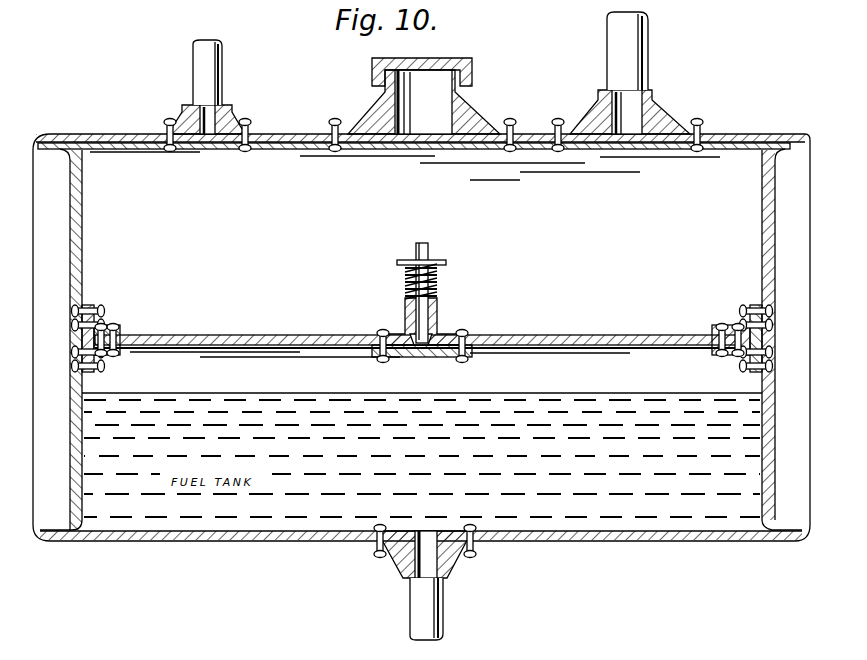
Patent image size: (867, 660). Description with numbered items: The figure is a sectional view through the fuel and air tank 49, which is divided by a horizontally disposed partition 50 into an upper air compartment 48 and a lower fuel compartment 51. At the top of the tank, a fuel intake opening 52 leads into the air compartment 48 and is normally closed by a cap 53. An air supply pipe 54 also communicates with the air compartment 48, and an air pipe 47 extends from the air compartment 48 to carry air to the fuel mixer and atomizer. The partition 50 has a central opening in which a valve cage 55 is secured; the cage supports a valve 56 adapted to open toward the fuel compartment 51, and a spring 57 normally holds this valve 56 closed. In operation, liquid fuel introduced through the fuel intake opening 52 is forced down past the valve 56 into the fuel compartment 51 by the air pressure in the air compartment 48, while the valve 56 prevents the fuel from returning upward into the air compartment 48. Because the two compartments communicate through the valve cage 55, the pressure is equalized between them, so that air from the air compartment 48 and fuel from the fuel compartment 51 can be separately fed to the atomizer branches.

The air pipe 47 is at (223, 74).
The upper air compartment 48 is at (420, 336).
The fuel and air tank 49 is at (740, 133).
The partition 50 is at (560, 338).
The lower fuel compartment 51 is at (422, 378).
The fuel intake opening 52 is at (440, 118).
The cap 53 is at (372, 60).
The air supply pipe 54 is at (630, 48).
The valve cage 55 is at (420, 316).
The valve 56 is at (428, 357).
The spring 57 is at (410, 283).